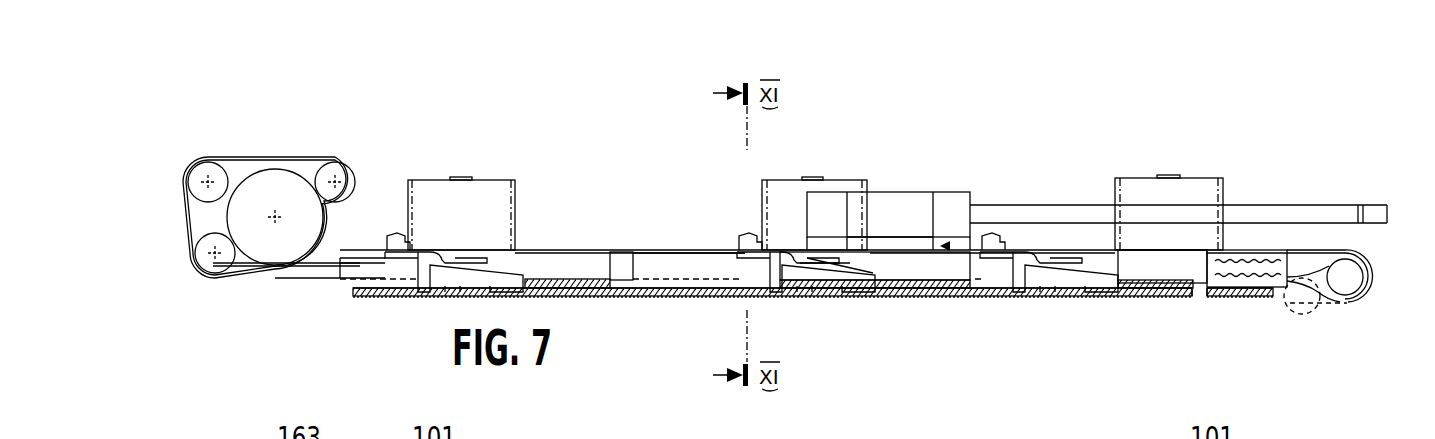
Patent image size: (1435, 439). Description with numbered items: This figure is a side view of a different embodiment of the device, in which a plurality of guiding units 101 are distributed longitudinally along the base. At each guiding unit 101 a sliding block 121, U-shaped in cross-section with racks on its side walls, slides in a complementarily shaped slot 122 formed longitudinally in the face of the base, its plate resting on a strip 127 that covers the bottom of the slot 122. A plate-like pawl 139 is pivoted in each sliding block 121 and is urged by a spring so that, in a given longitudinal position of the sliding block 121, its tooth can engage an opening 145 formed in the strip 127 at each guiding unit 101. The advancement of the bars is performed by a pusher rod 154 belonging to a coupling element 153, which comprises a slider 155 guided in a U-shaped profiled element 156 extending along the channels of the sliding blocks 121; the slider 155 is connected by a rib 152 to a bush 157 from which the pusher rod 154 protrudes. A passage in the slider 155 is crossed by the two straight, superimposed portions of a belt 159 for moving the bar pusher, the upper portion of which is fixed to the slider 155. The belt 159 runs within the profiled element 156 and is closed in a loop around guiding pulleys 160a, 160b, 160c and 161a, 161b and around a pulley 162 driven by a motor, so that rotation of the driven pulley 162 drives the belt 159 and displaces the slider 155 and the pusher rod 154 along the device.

The guiding unit 101 is at (536, 182).
The sliding block 121 is at (625, 254).
The slot 122 is at (558, 266).
The strip 127 is at (645, 297).
The plate-like pawl 139 is at (437, 233).
The opening 145 is at (1198, 293).
The rib 152 is at (907, 243).
The coupling element 153 is at (903, 176).
The pusher rod 154 is at (1265, 213).
The slider 155 is at (900, 270).
The U-shaped profiled element 156 is at (712, 250).
The bush 157 is at (917, 202).
The belt 159 is at (307, 277).
The guiding pulley 160a is at (343, 170).
The guiding pulley 160b is at (200, 172).
The guiding pulley 160c is at (200, 272).
The guiding pulley 161a is at (1290, 310).
The guiding pulley 161b is at (1343, 285).
The driven pulley 162 is at (275, 180).